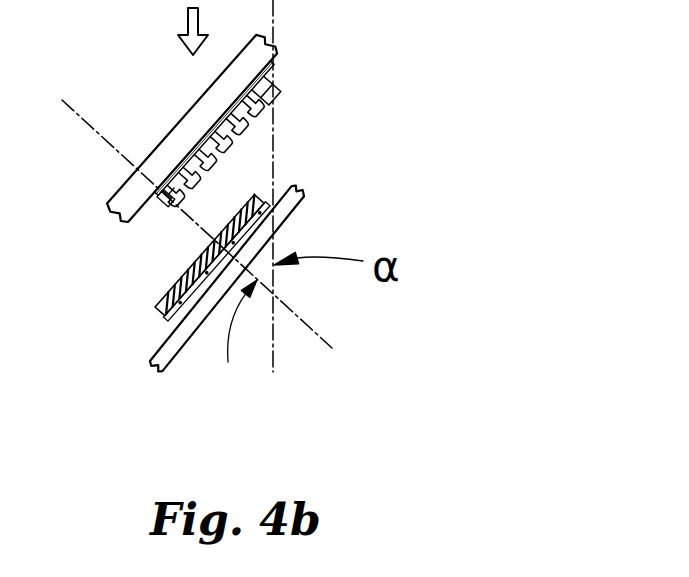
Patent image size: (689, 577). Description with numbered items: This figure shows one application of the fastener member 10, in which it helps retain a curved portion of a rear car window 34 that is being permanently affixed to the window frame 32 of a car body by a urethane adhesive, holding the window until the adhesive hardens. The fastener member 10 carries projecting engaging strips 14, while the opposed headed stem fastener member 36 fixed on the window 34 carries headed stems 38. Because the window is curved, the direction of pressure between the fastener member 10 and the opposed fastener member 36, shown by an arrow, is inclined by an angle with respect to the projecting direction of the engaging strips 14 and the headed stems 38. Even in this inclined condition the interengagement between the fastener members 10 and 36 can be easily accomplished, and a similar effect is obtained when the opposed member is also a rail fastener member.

The fastener member 10 is at (207, 274).
The engaging strips 14 is at (136, 311).
The window frame 32 is at (176, 360).
The window 34 is at (178, 121).
The fastener member 36 is at (165, 229).
The headed stems 38 is at (260, 131).